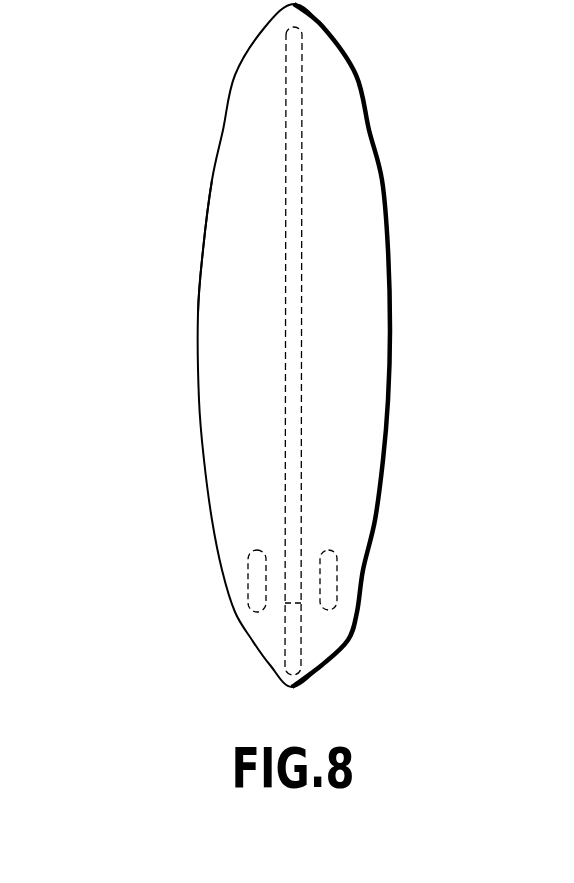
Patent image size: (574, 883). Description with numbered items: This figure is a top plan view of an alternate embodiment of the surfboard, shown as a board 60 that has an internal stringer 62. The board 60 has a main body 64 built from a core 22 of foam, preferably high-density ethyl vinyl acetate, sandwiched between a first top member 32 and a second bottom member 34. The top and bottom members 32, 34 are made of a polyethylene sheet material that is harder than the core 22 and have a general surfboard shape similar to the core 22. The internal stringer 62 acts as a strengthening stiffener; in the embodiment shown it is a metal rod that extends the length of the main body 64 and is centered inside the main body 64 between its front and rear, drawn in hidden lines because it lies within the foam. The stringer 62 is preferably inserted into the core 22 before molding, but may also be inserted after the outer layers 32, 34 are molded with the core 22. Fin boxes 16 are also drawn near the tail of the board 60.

The board 60 is at (106, 80).
The internal stringer 62 is at (302, 172).
The main body 64 is at (198, 310).
The core 22 is at (363, 385).
The first top member 32 is at (365, 468).
The second bottom member 34 is at (383, 525).
The fin boxes 16 is at (253, 603).